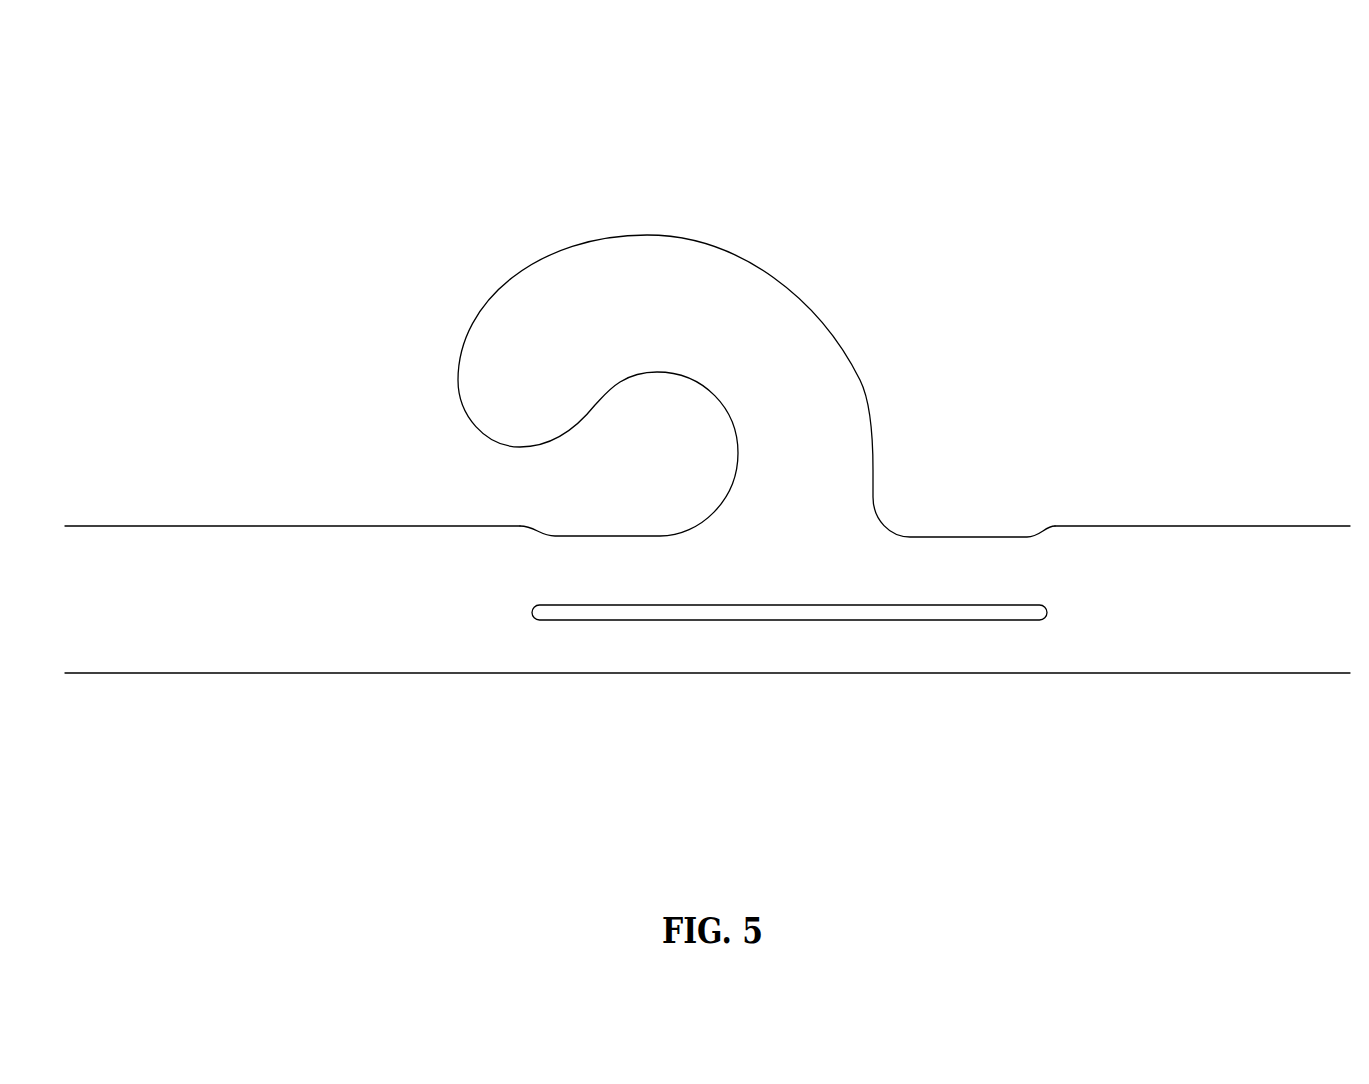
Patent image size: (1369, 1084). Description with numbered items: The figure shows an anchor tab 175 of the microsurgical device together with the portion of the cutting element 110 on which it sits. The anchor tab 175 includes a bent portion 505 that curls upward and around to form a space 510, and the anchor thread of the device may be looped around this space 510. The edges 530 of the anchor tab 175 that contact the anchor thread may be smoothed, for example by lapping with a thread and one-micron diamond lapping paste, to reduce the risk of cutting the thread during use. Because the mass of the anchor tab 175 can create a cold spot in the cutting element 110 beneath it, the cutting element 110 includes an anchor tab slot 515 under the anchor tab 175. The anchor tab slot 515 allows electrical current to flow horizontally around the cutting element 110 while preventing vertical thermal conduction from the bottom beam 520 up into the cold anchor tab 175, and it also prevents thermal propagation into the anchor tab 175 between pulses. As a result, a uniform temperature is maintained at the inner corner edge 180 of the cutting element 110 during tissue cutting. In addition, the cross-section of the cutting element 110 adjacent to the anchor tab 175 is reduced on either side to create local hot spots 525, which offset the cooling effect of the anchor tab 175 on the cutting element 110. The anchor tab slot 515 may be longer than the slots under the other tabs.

The anchor tab 175 is at (113, 88).
The cutting element 110 is at (205, 555).
The inner corner edge 180 is at (415, 670).
The bent portion 505 is at (763, 262).
The space 510 is at (660, 447).
The anchor tab slot 515 is at (1038, 603).
The bottom beam 520 is at (818, 642).
The hot spots 525 is at (957, 537).
The edges 530 is at (632, 372).